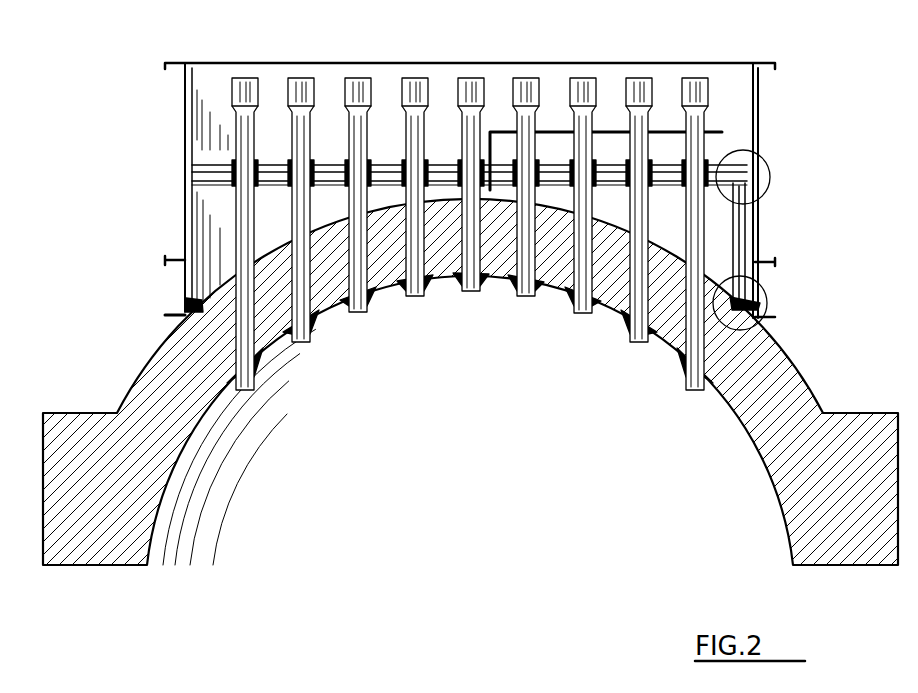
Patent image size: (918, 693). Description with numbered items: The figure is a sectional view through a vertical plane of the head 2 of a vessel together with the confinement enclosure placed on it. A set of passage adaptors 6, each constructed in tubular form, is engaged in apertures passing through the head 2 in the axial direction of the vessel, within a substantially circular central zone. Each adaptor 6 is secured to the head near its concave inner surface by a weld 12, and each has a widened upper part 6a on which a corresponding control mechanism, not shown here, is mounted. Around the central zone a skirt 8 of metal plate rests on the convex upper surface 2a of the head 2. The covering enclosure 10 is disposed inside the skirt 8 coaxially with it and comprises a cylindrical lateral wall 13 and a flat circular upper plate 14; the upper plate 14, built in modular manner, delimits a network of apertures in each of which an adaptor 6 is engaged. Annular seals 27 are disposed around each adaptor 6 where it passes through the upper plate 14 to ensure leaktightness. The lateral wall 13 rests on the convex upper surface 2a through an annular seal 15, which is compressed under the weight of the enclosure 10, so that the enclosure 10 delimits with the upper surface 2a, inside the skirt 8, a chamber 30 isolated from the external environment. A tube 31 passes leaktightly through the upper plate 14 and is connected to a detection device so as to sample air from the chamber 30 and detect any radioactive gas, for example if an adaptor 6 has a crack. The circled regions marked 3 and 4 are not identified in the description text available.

The head 2 is at (775, 383).
The convex upper surface 2a is at (672, 258).
The lower sealing region 3 is at (767, 292).
The upper mounting region 4 is at (770, 168).
The passage adaptor 6 is at (577, 93).
The widened upper part 6a is at (247, 90).
The skirt 8 is at (753, 133).
The covering enclosure 10 is at (192, 165).
The weld 12 is at (348, 300).
The cylindrical lateral wall 13 is at (200, 245).
The upper plate 14 is at (433, 185).
The annular seal 15 is at (192, 302).
The annular seal 27 is at (443, 163).
The chamber 30 is at (713, 255).
The tube 31 is at (670, 128).